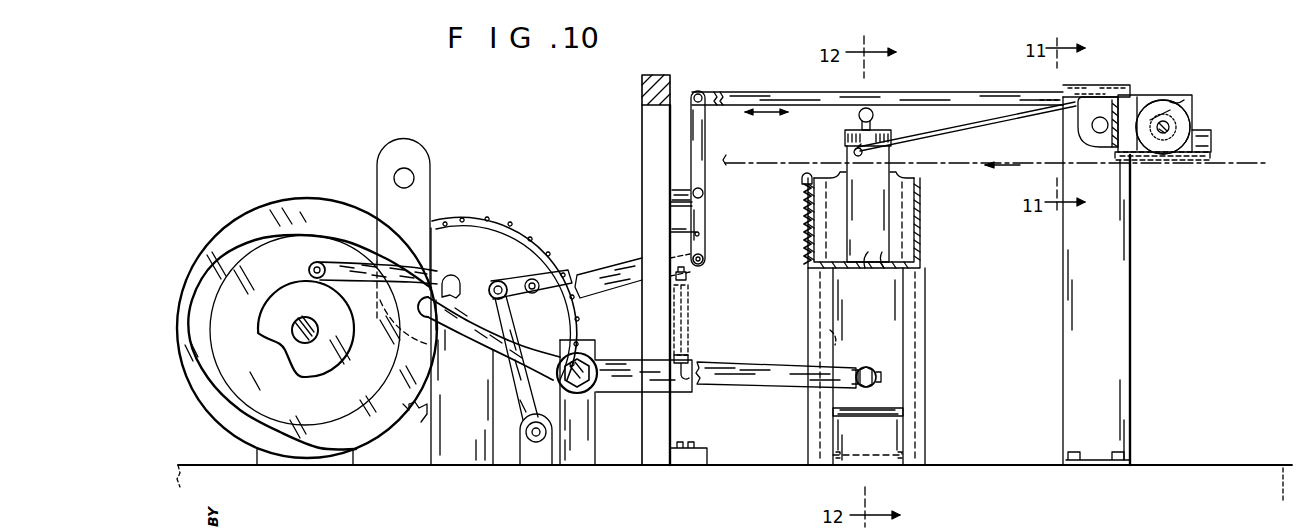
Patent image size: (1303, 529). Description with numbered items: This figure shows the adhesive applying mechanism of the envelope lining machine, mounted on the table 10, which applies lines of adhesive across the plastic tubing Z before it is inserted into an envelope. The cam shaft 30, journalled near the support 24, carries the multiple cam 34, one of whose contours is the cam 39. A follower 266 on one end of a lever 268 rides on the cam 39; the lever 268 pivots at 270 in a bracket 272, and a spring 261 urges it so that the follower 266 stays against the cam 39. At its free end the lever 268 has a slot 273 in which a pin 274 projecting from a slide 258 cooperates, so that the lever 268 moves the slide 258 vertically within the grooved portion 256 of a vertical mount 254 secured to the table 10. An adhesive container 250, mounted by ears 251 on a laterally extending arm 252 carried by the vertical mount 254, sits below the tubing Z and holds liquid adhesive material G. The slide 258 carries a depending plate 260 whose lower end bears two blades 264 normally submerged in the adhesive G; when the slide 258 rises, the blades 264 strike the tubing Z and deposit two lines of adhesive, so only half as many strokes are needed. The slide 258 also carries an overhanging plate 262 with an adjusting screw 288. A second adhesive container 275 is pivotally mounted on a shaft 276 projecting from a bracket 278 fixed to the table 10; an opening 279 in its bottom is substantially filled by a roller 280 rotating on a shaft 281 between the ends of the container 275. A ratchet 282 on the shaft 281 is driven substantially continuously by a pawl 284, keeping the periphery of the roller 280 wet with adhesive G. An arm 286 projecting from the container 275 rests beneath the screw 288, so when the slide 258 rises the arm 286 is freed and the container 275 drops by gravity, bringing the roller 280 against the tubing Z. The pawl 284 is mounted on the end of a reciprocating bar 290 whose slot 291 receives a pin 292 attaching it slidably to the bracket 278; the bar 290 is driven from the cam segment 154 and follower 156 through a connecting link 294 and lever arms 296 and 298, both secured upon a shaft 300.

The table 10 is at (948, 465).
The support 24 is at (474, 444).
The cam shaft 30 is at (294, 330).
The multiple cam 34 is at (196, 400).
The cam 39 is at (350, 340).
The cam segment 154 is at (450, 284).
The follower 156 is at (497, 281).
The adhesive container 250 is at (810, 258).
The ears 251 is at (802, 182).
The laterally extending arm 252 is at (803, 222).
The vertical mount 254 is at (818, 300).
The grooved portion 256 is at (825, 345).
The slide 258 is at (905, 310).
The depending plate 260 is at (883, 232).
The spring 261 is at (688, 290).
The overhanging plate 262 is at (868, 142).
The blades 264 is at (868, 268).
The follower 266 is at (317, 262).
The lever 268 is at (618, 362).
The pivot 270 is at (588, 392).
The bracket 272 is at (585, 436).
The slot 273 is at (835, 385).
The pin 274 is at (870, 367).
The second adhesive container 275 is at (1212, 132).
The shaft 276 is at (1102, 117).
The bracket 278 is at (1120, 258).
The opening 279 is at (1170, 152).
The roller 280 is at (1162, 150).
The shaft 281 is at (1162, 121).
The ratchet 282 is at (1178, 122).
The pawl 284 is at (1170, 102).
The arm 286 is at (960, 130).
The adjusting screw 288 is at (858, 120).
The reciprocating bar 290 is at (938, 93).
The slot 291 is at (1040, 100).
The pin 292 is at (1066, 88).
The connecting link 294 is at (594, 275).
The lever arm 296 is at (720, 258).
The lever arm 298 is at (702, 140).
The shaft 300 is at (703, 191).
The liquid adhesive material G is at (1138, 110).
The tubing Z is at (1024, 163).